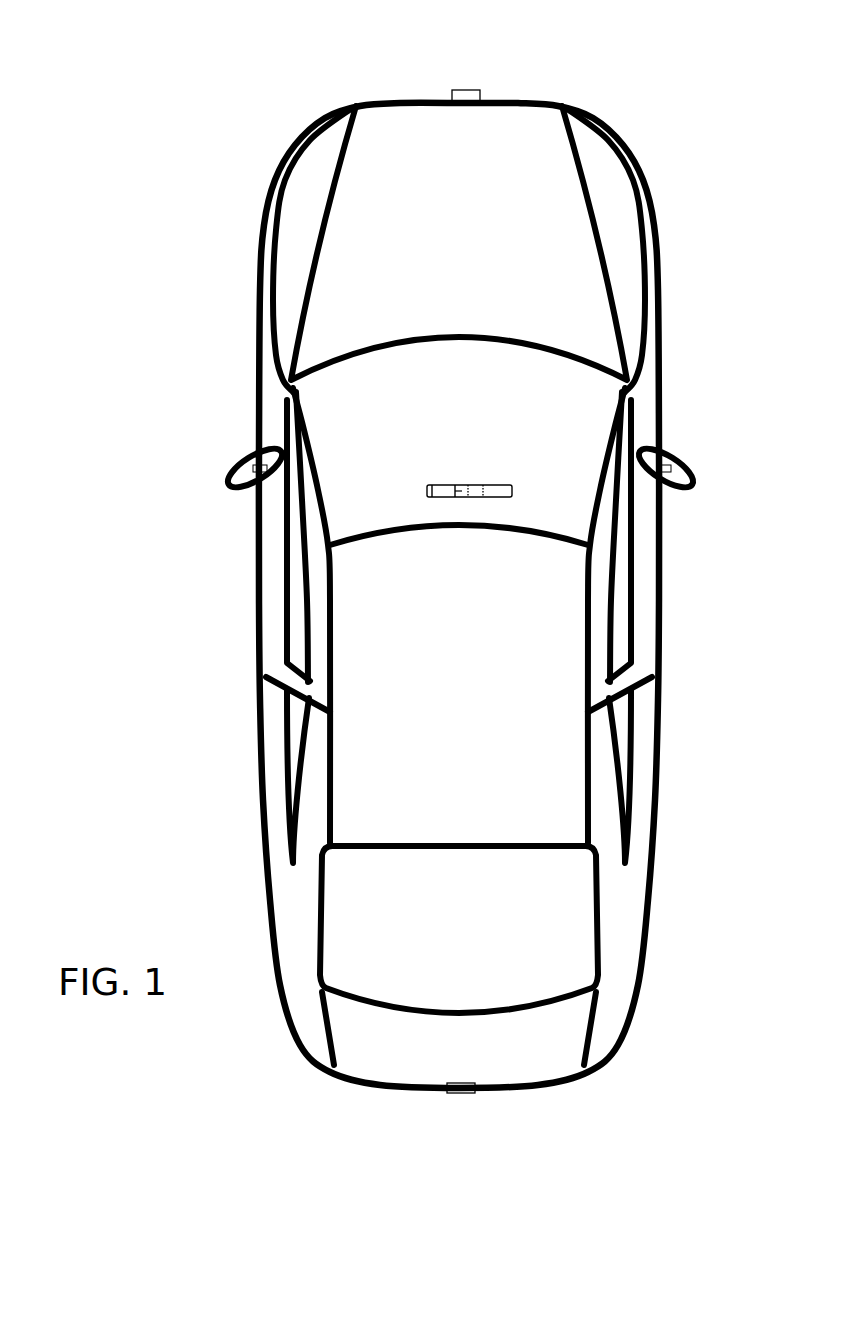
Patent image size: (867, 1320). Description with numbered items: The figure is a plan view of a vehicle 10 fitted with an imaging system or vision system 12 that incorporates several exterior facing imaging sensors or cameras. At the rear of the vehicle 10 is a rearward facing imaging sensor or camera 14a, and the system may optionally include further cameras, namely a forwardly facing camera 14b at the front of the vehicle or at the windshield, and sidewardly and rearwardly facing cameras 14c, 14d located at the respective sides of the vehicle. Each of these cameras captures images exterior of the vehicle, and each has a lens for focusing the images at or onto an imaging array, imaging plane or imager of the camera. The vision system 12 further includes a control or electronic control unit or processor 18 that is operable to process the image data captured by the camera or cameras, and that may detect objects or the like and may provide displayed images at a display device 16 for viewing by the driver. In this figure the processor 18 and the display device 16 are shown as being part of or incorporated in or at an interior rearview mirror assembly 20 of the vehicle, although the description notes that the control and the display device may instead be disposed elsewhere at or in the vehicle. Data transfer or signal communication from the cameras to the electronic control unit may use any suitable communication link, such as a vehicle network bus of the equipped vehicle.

The vehicle 10 is at (198, 190).
The vision system 12 is at (412, 1113).
The rearward facing camera 14a is at (465, 1092).
The forwardly facing camera 14b is at (467, 90).
The sidewardly/rearwardly facing camera 14c is at (247, 463).
The sidewardly/rearwardly facing camera 14d is at (667, 463).
The display device 16 is at (447, 485).
The electronic control unit 18 is at (467, 483).
The interior rearview mirror assembly 20 is at (513, 480).